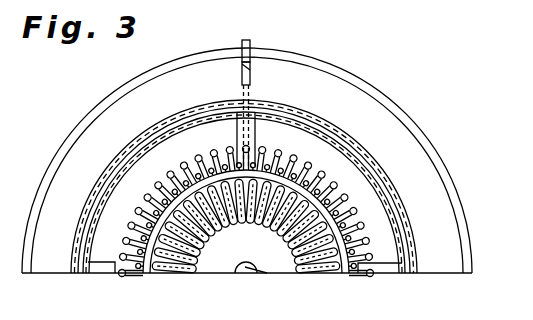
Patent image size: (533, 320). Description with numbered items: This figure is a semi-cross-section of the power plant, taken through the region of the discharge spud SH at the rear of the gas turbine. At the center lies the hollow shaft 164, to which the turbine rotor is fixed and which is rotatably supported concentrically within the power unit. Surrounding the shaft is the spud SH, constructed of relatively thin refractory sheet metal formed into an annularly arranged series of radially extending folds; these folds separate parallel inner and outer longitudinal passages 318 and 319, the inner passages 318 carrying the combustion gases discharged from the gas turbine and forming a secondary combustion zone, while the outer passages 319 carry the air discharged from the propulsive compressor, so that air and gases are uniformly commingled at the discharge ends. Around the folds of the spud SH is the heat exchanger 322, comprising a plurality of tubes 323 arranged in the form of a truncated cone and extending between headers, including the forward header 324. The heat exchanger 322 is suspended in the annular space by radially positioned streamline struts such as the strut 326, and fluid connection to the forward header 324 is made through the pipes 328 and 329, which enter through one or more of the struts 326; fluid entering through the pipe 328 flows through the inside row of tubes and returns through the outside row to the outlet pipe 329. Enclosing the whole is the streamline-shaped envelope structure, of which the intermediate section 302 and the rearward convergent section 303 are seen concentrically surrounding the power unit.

The intermediate section 302 is at (148, 73).
The rearward convergent section 303 is at (108, 125).
The inner longitudinal passages 318 is at (300, 112).
The outer longitudinal passages 319 is at (330, 141).
The heat exchanger 322 is at (375, 233).
The tubes 323 is at (345, 195).
The forward header 324 is at (360, 263).
The streamline strut 326 is at (101, 272).
The inlet pipe 328 is at (250, 43).
The outlet pipe 329 is at (250, 77).
The hollow shaft 164 is at (262, 272).
The spud SH is at (220, 265).